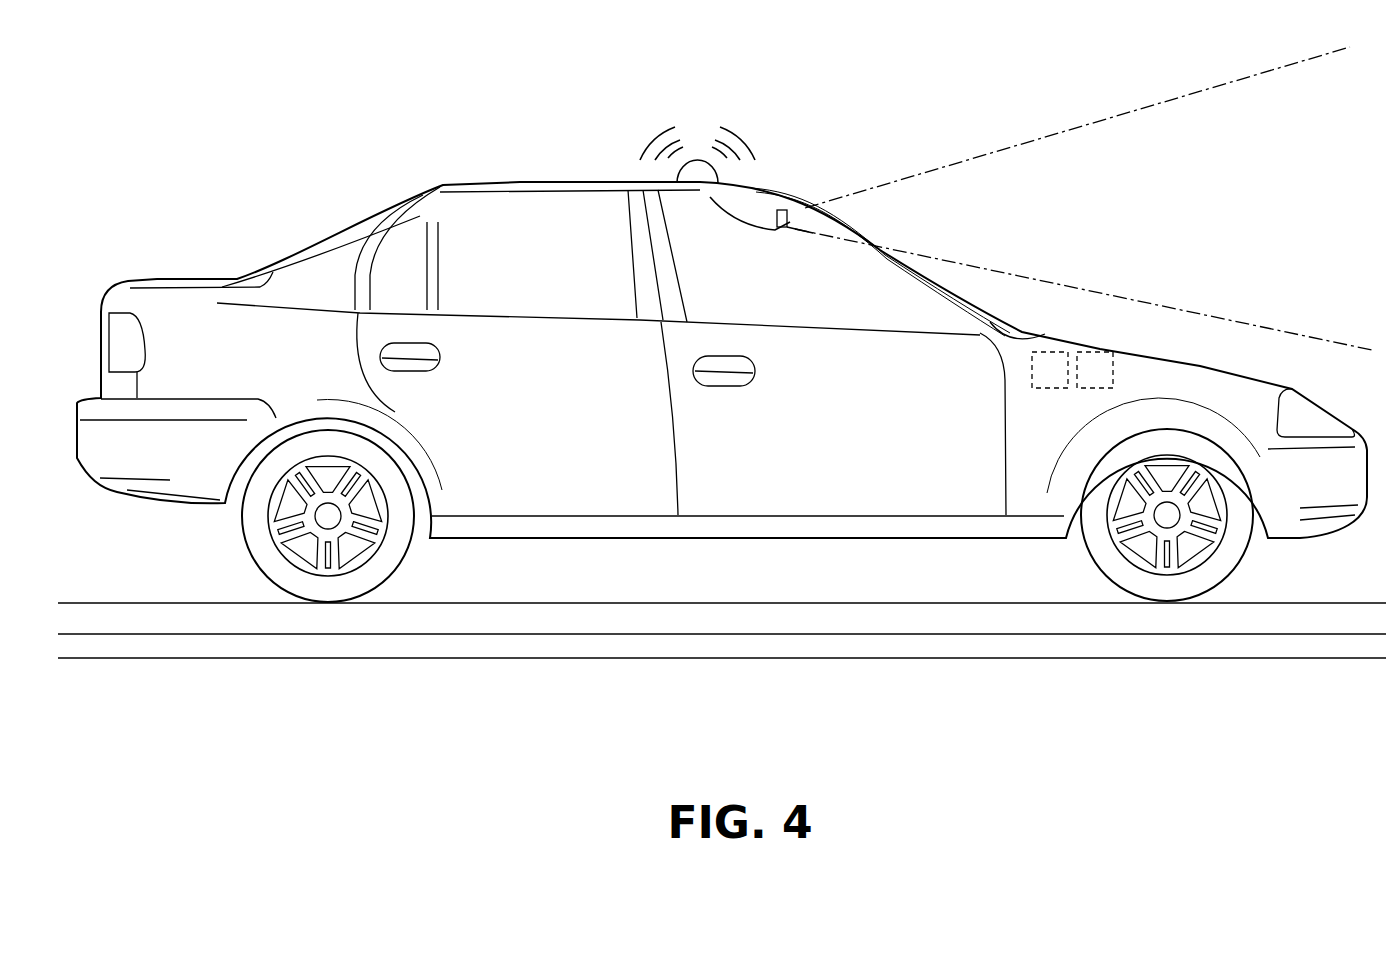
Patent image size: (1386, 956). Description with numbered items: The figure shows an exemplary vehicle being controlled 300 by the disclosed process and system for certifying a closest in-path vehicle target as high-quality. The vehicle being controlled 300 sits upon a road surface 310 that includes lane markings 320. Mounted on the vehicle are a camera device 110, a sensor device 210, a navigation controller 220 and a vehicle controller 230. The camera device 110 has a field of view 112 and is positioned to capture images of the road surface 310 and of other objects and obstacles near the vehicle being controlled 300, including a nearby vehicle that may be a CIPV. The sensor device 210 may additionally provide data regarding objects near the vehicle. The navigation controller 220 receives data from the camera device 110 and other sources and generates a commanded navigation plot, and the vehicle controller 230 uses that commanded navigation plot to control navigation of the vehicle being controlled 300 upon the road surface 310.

The vehicle being controlled 300 is at (465, 182).
The sensor device 210 is at (697, 165).
The camera device 110 is at (773, 213).
The field of view 112 is at (1118, 117).
The navigation controller 220 is at (1050, 352).
The vehicle controller 230 is at (1103, 352).
The road surface 310 is at (793, 572).
The lane markings 320 is at (977, 650).